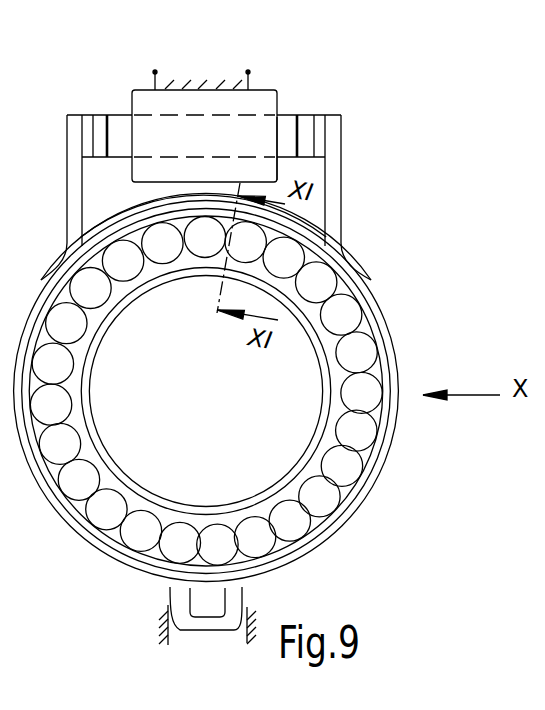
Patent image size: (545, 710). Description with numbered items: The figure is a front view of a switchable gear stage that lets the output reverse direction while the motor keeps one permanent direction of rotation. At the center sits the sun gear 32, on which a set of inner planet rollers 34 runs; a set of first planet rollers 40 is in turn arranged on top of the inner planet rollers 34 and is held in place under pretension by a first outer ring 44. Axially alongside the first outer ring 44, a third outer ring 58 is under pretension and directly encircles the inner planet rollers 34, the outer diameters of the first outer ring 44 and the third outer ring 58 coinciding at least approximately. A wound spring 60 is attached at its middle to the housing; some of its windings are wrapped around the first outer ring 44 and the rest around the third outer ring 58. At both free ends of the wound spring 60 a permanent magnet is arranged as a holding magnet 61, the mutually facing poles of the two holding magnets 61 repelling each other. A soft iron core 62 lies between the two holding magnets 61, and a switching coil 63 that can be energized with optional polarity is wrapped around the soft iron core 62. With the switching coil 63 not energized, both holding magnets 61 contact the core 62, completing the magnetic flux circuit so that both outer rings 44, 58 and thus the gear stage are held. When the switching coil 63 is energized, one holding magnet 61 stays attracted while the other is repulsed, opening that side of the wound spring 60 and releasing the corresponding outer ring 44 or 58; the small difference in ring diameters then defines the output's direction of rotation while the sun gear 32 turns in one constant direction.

The sun gear 32 is at (330, 425).
The inner planet rollers 34 is at (317, 292).
The first planet rollers 40 is at (283, 262).
The first outer ring 44 is at (385, 343).
The third outer ring 58 is at (383, 368).
The wound spring 60 is at (327, 170).
The holding magnets 61 is at (96, 133).
The soft iron core 62 is at (284, 132).
The switching coil 63 is at (207, 127).